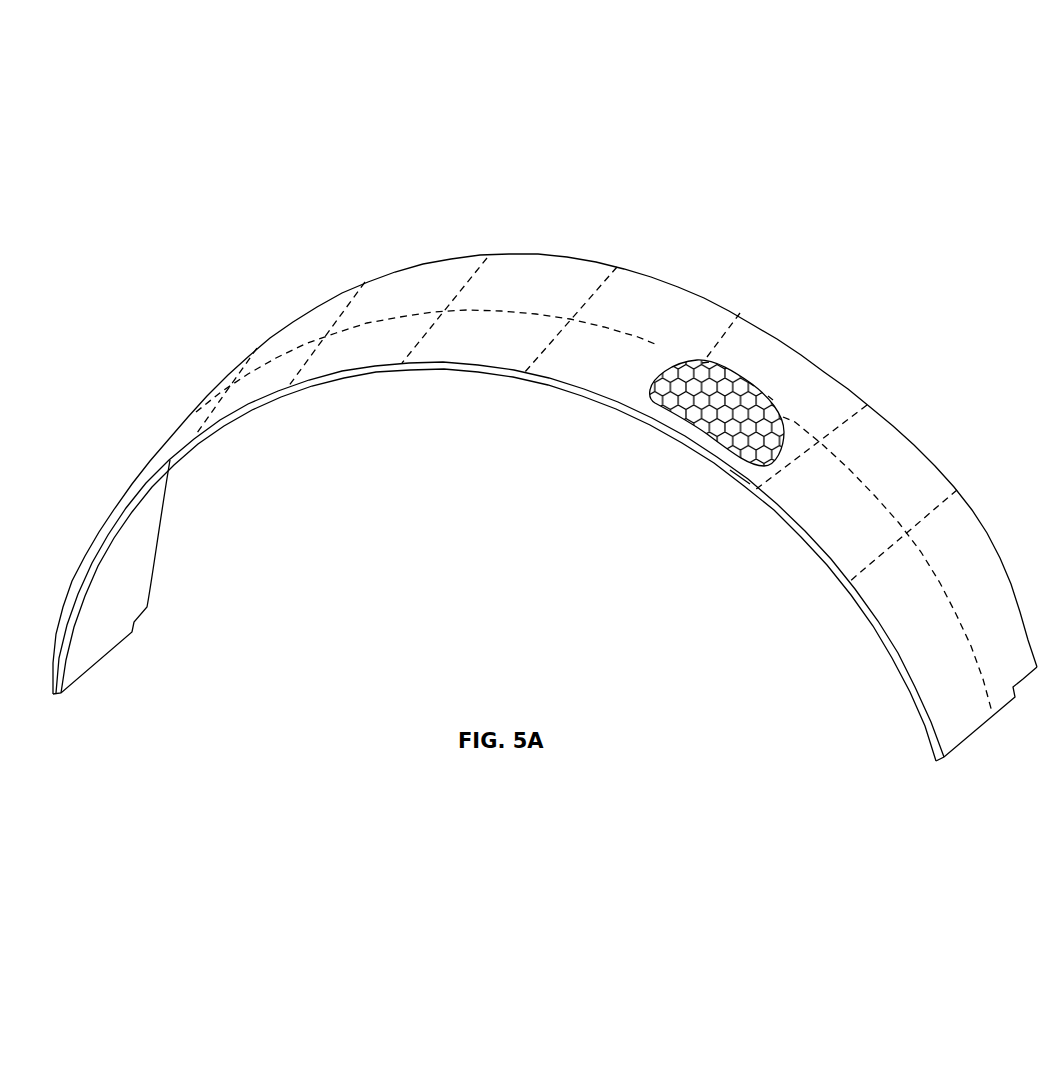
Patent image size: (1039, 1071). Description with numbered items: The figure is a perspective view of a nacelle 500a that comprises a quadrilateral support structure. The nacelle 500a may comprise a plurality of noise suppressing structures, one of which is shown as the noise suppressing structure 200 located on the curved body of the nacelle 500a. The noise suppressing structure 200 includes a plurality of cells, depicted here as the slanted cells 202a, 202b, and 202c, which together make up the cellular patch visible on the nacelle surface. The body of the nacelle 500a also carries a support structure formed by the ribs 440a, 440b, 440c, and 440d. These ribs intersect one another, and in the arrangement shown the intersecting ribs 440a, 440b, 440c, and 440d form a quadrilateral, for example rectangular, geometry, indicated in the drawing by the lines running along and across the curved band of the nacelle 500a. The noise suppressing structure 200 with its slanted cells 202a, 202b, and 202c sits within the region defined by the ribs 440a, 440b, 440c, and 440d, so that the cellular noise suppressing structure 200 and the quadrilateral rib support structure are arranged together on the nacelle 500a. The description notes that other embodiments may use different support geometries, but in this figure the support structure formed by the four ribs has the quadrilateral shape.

The nacelle 500a is at (545, 402).
The noise suppressing structure 200 is at (786, 326).
The slanted cell 202a is at (709, 362).
The slanted cell 202b is at (752, 385).
The slanted cell 202c is at (770, 398).
The rib 440a is at (648, 393).
The rib 440b is at (805, 427).
The rib 440c is at (793, 452).
The rib 440d is at (740, 477).